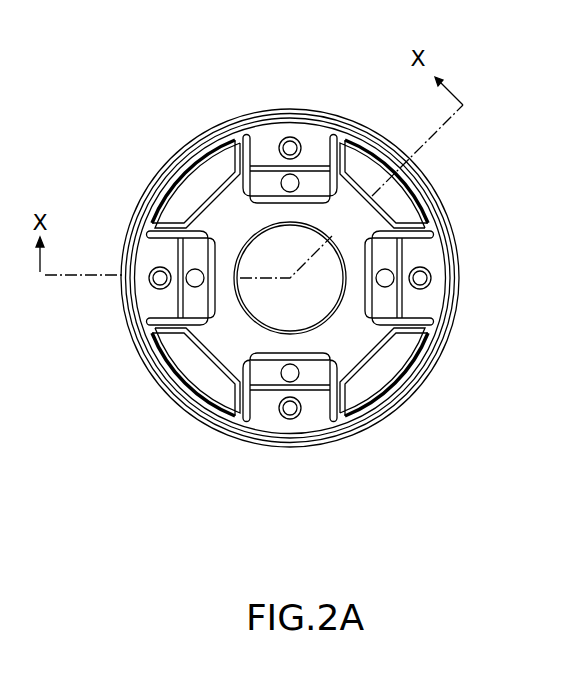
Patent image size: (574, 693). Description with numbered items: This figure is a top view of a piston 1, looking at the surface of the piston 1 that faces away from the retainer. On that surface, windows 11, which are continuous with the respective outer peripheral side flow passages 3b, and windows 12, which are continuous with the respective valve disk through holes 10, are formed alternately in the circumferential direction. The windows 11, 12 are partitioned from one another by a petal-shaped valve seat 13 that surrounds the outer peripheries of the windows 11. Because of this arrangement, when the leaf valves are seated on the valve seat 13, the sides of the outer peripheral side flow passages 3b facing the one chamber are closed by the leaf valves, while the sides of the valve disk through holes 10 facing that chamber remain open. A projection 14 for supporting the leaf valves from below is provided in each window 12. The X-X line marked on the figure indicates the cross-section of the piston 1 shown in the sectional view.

The piston 1 is at (452, 174).
The outer peripheral side flow passage 3b is at (378, 385).
The valve disk through hole 10 is at (281, 378).
The window 11 is at (445, 213).
The window 12 is at (312, 412).
The valve seat 13 is at (435, 352).
The projection 14 is at (294, 421).